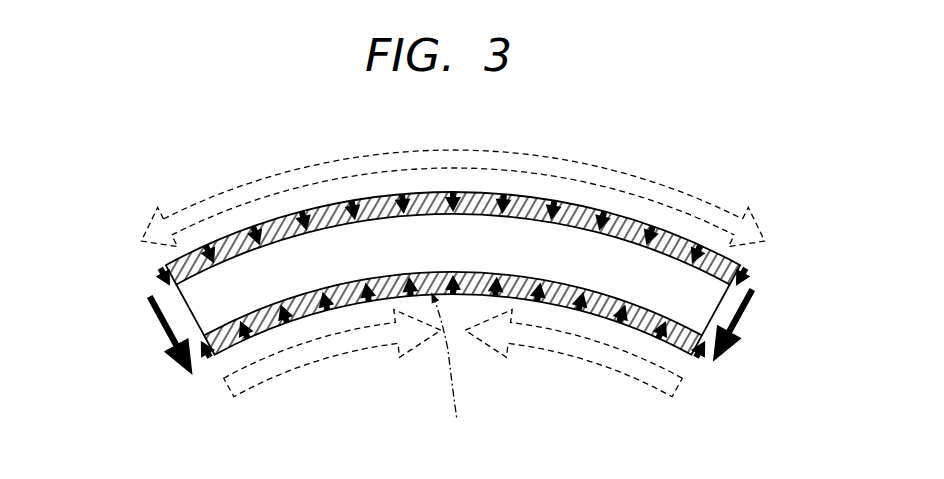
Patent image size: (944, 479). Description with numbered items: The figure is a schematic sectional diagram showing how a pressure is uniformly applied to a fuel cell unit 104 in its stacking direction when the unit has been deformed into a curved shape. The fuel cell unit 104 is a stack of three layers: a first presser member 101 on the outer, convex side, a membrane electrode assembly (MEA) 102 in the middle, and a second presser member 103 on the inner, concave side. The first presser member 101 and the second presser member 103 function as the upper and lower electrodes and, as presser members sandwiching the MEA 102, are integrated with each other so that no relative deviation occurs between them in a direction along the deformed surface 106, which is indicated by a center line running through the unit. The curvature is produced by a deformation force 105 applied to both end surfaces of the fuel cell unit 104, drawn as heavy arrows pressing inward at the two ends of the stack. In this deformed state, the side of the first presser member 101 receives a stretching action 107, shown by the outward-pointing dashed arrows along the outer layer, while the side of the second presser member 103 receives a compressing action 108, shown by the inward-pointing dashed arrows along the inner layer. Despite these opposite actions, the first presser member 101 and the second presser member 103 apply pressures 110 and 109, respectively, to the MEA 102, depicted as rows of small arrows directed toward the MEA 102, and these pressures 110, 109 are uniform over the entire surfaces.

The first presser member 101 is at (412, 202).
The membrane electrode assembly 102 is at (243, 275).
The second presser member 103 is at (453, 278).
The fuel cell unit 104 is at (760, 331).
The deformation force 105 is at (171, 352).
The deformed surface 106 is at (459, 372).
The stretching action 107 is at (153, 219).
The compressing action 108 is at (315, 366).
The pressure 109 is at (578, 300).
The pressure 110 is at (650, 237).